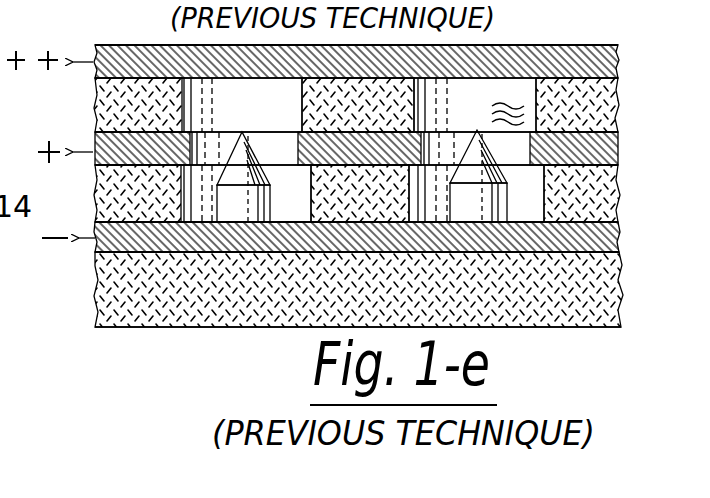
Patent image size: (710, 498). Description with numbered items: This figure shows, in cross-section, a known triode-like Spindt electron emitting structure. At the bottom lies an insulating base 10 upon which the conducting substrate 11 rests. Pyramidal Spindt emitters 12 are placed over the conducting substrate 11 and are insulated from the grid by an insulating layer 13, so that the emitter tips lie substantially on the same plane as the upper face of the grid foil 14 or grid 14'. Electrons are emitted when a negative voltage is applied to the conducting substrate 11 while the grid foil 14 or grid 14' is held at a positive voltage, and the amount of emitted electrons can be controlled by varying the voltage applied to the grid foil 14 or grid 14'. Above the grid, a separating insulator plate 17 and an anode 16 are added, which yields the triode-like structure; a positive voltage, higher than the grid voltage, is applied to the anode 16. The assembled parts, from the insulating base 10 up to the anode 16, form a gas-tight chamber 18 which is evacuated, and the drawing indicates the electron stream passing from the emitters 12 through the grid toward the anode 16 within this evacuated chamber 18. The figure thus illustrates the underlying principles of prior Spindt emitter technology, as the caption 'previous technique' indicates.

The insulating base 10 is at (96, 277).
The conducting substrate 11 is at (620, 232).
The pyramidal Spindt emitter 12 is at (248, 132).
The insulating layer 13 is at (599, 200).
The grid foil 14 is at (315, 193).
The grid 14' is at (395, 129).
The anode 16 is at (138, 63).
The separating insulator plate 17 is at (603, 98).
The gas-tight chamber 18 is at (519, 104).